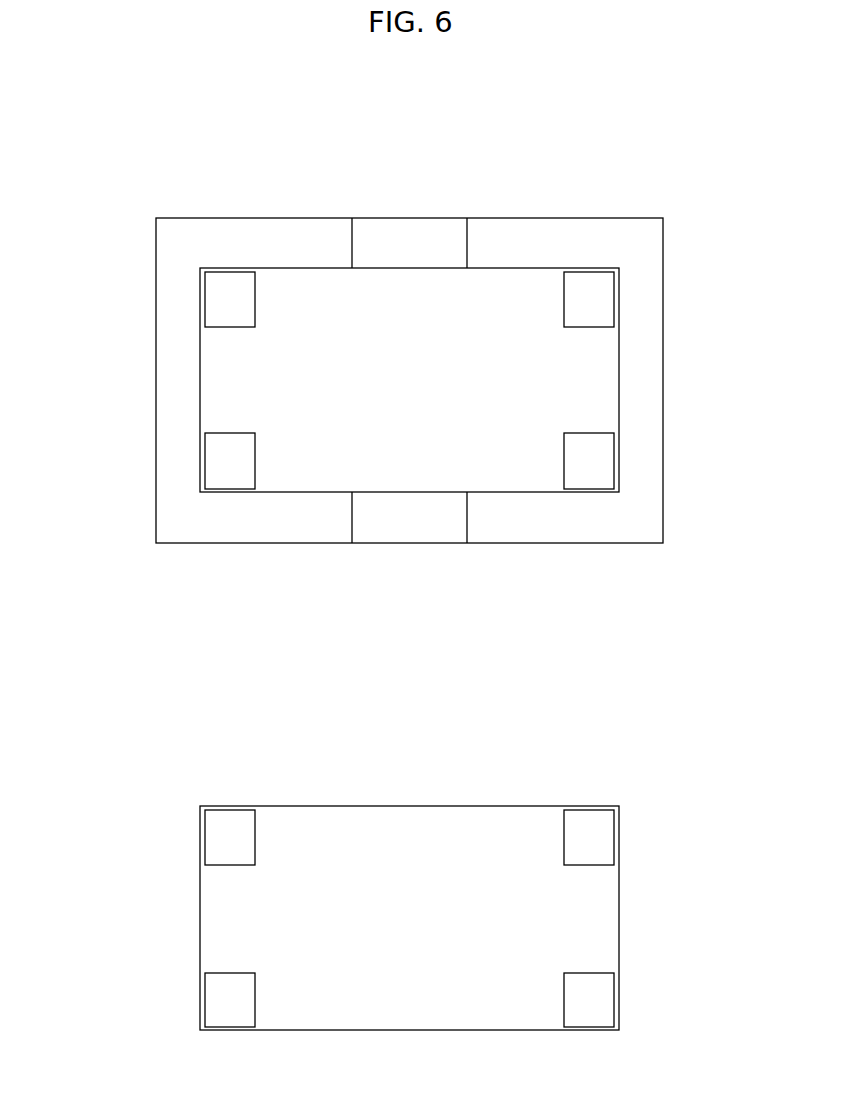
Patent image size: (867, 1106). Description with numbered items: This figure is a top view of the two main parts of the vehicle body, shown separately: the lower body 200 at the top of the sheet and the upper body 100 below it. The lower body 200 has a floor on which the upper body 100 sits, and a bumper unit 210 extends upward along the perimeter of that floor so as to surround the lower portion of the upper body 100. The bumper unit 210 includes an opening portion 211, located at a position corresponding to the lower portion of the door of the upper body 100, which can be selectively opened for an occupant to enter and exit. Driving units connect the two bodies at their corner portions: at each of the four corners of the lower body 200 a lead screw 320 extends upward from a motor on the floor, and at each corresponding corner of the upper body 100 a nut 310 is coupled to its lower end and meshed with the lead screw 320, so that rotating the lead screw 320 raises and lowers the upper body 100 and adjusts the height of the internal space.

The upper body 100 is at (363, 791).
The lower body 200 is at (364, 196).
The bumper unit 210 is at (565, 218).
The opening portion 211 is at (442, 218).
The nut 310 is at (222, 841).
The lead screw 320 is at (222, 298).